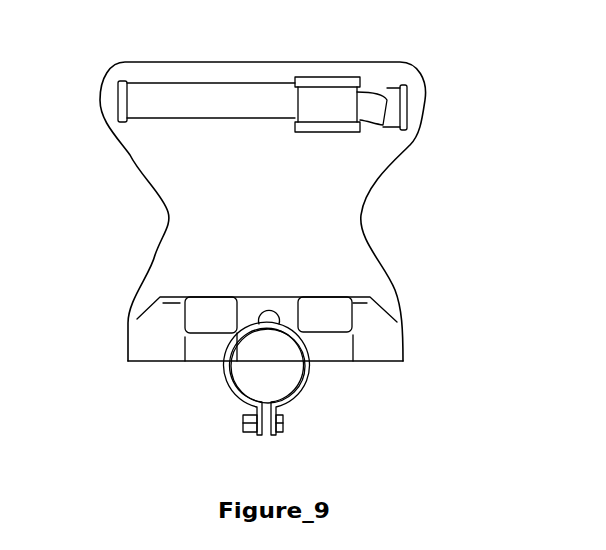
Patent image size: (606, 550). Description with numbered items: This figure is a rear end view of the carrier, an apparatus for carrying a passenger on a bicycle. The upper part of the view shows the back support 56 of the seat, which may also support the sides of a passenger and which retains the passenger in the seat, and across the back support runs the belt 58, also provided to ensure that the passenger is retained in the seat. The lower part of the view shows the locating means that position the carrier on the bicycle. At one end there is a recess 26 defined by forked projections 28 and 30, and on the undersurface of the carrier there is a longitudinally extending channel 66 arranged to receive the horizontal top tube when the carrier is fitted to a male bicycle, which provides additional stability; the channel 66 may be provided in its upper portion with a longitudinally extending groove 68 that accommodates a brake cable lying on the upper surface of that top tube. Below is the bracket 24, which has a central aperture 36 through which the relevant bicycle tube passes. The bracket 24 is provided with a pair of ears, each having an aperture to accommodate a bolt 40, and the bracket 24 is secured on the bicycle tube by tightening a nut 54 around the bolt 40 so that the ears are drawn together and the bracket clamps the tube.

The back support 56 is at (222, 148).
The belt 58 is at (262, 100).
The recess 26 is at (280, 305).
The forked projection 28 is at (212, 319).
The forked projection 30 is at (340, 313).
The channel 66 is at (278, 352).
The groove 68 is at (263, 328).
The bracket 24 is at (313, 377).
The central aperture 36 is at (248, 373).
The nut 54 is at (243, 430).
The bolt 40 is at (268, 433).